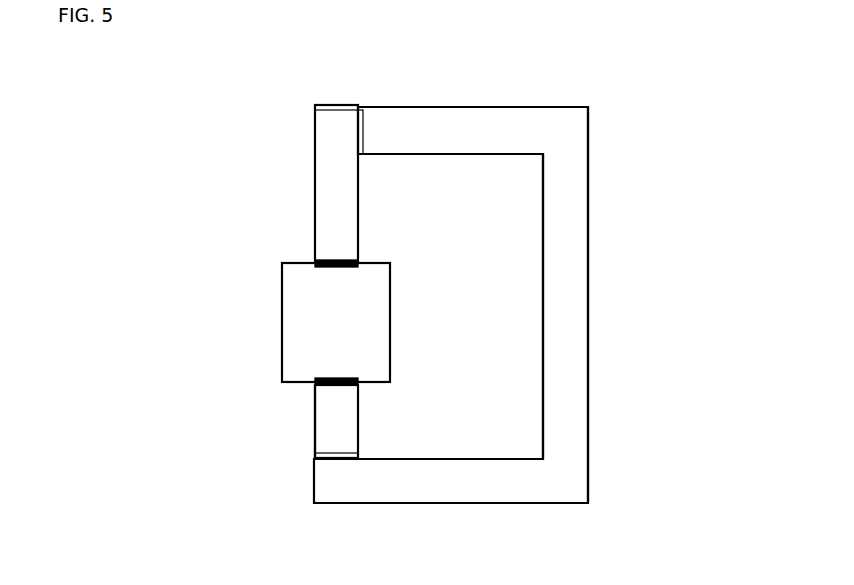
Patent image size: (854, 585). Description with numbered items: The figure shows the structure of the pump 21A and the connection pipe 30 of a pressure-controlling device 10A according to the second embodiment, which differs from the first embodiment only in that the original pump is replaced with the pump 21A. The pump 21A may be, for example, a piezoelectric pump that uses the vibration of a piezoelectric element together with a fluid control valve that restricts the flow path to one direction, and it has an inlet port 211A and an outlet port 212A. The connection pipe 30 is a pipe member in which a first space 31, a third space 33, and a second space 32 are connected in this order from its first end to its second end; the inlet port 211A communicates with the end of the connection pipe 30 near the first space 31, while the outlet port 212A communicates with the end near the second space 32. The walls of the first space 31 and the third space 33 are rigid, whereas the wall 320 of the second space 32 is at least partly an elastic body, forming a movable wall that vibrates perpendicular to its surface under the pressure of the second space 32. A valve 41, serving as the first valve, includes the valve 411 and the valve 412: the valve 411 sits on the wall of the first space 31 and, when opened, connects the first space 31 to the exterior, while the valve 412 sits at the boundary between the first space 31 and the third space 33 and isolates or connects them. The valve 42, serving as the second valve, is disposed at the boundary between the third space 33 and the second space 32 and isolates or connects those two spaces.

The pressure-controlling device 10A is at (612, 72).
The connection pipe 30 is at (577, 260).
The third space 33 is at (574, 188).
The first space 31 is at (322, 181).
The second space 32 is at (322, 421).
The wall 320 is at (315, 400).
The valve 41 is at (407, 65).
The valve 411 is at (348, 106).
The valve 412 is at (362, 110).
The valve 42 is at (320, 455).
The pump 21A is at (283, 321).
The inlet port 211A is at (323, 272).
The outlet port 212A is at (322, 374).